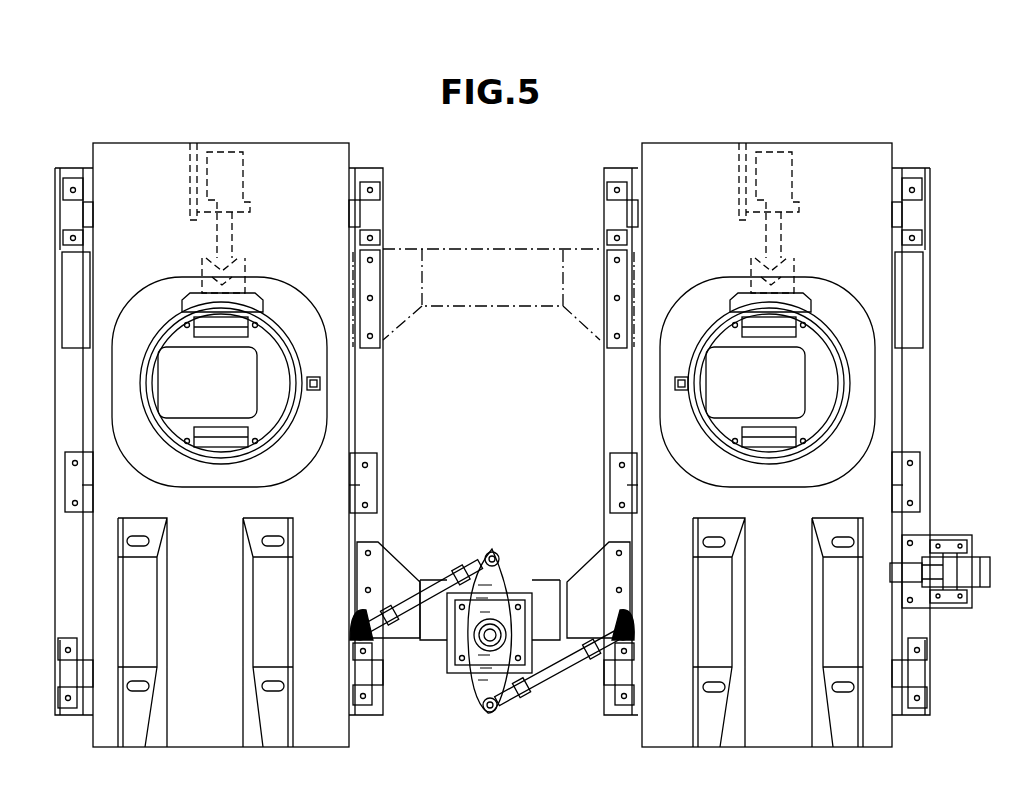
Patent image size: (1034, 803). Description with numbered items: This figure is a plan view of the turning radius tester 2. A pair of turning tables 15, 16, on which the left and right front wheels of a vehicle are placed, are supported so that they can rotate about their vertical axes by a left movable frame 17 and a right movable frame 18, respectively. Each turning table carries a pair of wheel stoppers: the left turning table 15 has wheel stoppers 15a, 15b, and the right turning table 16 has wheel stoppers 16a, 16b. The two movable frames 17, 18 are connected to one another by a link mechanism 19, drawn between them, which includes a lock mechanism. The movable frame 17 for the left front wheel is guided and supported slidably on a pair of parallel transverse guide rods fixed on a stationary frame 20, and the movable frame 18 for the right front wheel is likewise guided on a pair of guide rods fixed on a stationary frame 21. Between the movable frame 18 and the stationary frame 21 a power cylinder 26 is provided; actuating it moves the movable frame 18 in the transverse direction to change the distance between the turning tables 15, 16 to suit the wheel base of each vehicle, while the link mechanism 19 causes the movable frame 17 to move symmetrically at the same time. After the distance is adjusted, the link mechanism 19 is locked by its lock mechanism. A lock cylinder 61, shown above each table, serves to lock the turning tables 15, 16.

The turning radius tester 2 is at (951, 128).
The turning table 15 is at (235, 318).
The wheel stopper 15a is at (205, 326).
The wheel stopper 15b is at (194, 432).
The turning table 16 is at (785, 320).
The wheel stopper 16a is at (755, 328).
The wheel stopper 16b is at (742, 432).
The movable frame 17 is at (102, 448).
The movable frame 18 is at (878, 448).
The link mechanism 19 is at (509, 569).
The stationary frame 20 is at (62, 386).
The stationary frame 21 is at (914, 380).
The power cylinder 26 is at (970, 570).
The lock cylinder 61 is at (240, 175).